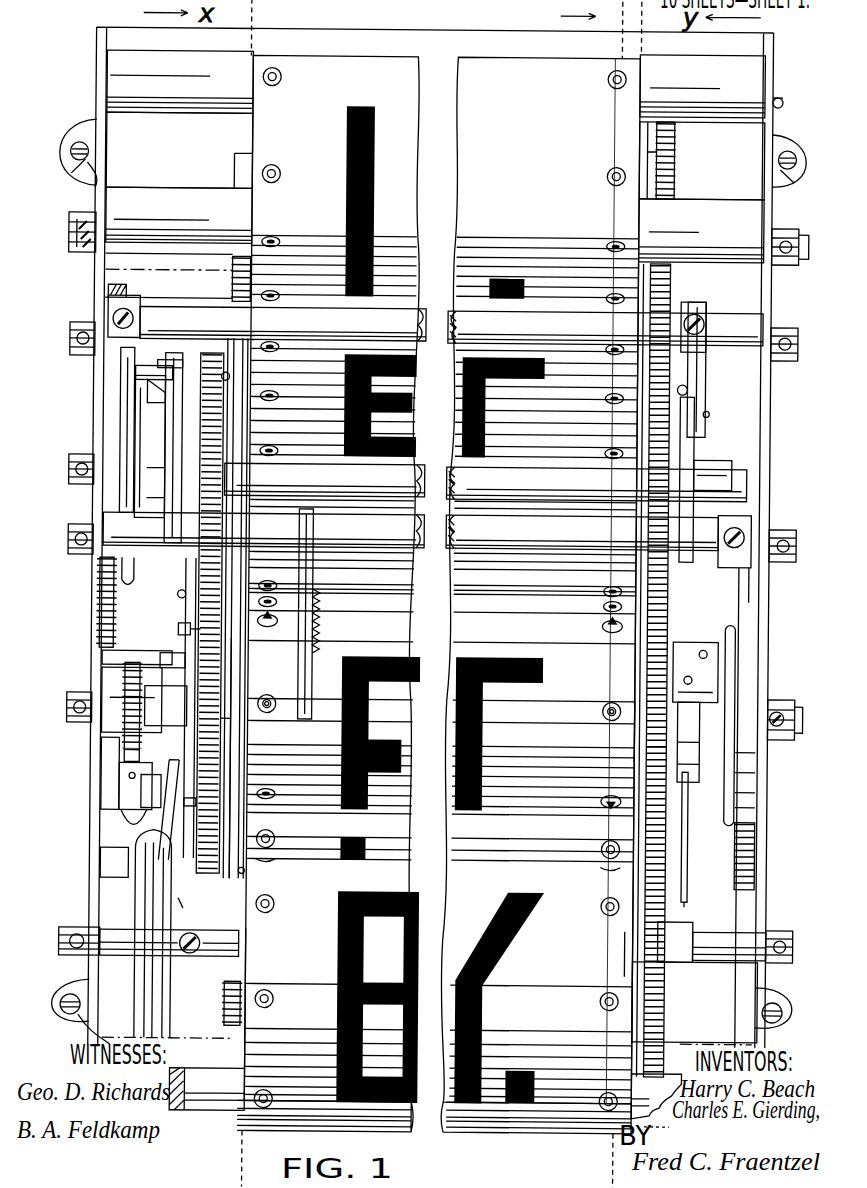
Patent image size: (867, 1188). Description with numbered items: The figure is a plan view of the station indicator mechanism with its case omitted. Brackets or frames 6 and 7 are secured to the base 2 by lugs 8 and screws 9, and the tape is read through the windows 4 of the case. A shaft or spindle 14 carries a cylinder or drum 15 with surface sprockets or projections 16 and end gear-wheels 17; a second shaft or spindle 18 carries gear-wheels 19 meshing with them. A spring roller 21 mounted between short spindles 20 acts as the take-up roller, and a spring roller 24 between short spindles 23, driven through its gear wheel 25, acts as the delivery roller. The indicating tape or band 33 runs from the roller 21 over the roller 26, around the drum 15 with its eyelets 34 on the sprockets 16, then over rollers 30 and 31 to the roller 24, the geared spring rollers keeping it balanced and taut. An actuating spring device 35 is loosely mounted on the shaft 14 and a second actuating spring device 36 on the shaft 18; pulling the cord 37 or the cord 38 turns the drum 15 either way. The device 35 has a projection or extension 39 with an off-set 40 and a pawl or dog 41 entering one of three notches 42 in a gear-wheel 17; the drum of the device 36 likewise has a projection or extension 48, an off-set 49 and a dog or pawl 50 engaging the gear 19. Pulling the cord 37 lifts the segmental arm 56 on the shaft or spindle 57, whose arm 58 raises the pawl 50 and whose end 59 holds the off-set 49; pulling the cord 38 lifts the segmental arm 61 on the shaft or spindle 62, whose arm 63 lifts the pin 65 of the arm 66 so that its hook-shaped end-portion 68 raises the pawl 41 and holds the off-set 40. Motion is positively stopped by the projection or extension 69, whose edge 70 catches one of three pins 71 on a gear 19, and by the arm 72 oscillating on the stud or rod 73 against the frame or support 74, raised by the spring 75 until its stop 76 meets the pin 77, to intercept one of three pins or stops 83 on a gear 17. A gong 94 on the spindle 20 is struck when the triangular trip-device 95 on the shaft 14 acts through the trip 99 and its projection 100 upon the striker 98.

The base 2 is at (470, 35).
The windows 4 is at (666, 573).
The bracket or frame 6 is at (100, 790).
The bracket or frame 7 is at (782, 108).
The lugs 8 is at (76, 140).
The screws 9 is at (76, 170).
The shaft or spindle 14 is at (115, 695).
The cylinder or drum 15 is at (238, 662).
The sprockets or projections 16 is at (270, 702).
The gear-wheels 17 is at (236, 726).
The second shaft or spindle 18 is at (800, 457).
The toothed or gear-wheels 19 is at (226, 432).
The short spindles 20 is at (68, 945).
The spring roller 21 is at (232, 1008).
The short spindles 23 is at (78, 254).
The spring roller 24 is at (235, 172).
The gear wheel 25 is at (680, 150).
The roller 26 is at (425, 1093).
The roller 30 is at (750, 192).
The roller 31 is at (436, 84).
The indicating tape or band 33 is at (433, 1148).
The eyelets 34 is at (281, 183).
The actuating spring device 35 is at (683, 746).
The second actuating spring device 36 is at (152, 446).
The pull-cord 37 is at (742, 770).
The pull-cord 38 is at (126, 562).
The projection or extension 39 is at (715, 692).
The off-set 40 is at (715, 660).
The pawl or dog 41 is at (690, 724).
The notches 42 is at (683, 762).
The projection or extension 48 is at (150, 400).
The off-set 49 is at (150, 390).
The dog or pawl 50 is at (195, 380).
The segmental arm 56 is at (760, 596).
The shaft or spindle 57 is at (427, 615).
The arm 58 is at (175, 475).
The end of arm 59 is at (182, 368).
The segmental arm 61 is at (120, 440).
The shaft or spindle 62 is at (742, 312).
The arm 63 is at (708, 368).
The pin or projection 65 is at (712, 414).
The arm 66 is at (700, 445).
The hook-shaped end-portion 68 is at (703, 680).
The projection or extension 69 is at (696, 843).
The edge 70 is at (696, 895).
The projections or pins 71 is at (690, 388).
The arm 72 is at (183, 596).
The stud or rod 73 is at (105, 862).
The frame or support 74 is at (235, 379).
The spring 75 is at (190, 832).
The stop 76 is at (178, 660).
The projection or pin 77 is at (130, 656).
The pins or stops 83 is at (183, 630).
The gong 94 is at (150, 933).
The trip-device 95 is at (145, 705).
The striker 98 is at (140, 820).
The trip 99 is at (108, 755).
The extension or projection 100 is at (145, 748).